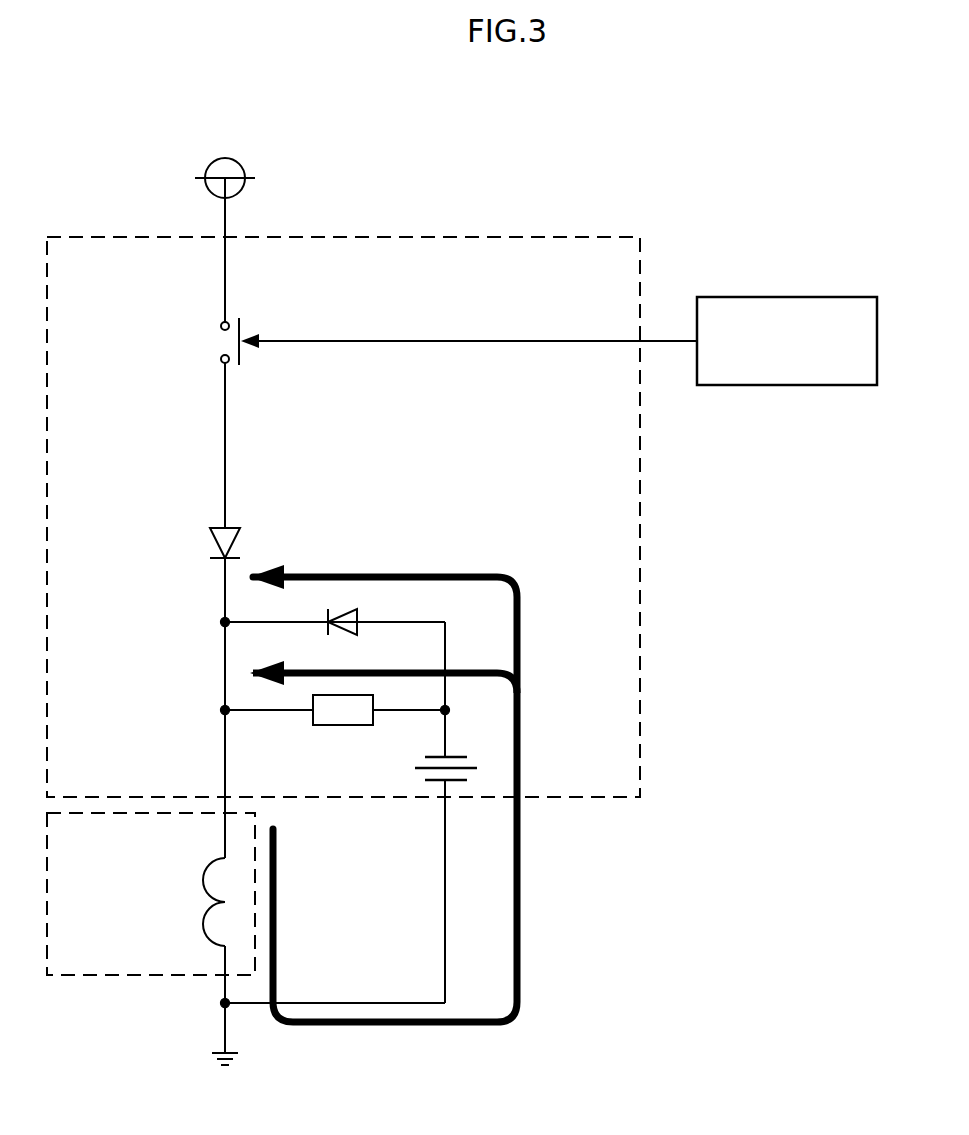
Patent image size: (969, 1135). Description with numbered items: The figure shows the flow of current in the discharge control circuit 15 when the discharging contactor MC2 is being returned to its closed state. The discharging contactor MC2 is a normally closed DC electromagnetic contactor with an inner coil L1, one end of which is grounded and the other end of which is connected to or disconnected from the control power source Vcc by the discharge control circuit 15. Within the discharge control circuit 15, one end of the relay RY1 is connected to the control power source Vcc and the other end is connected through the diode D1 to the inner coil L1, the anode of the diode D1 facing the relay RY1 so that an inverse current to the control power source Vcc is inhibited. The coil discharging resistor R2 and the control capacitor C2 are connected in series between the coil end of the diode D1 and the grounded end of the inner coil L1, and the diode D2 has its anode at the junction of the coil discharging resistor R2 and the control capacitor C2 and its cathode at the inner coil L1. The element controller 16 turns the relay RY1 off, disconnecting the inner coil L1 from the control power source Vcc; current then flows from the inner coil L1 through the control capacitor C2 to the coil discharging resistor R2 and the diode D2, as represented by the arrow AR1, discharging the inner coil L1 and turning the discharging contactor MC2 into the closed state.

The control power source Vcc is at (238, 162).
The discharge control circuit 15 is at (520, 237).
The relay RY1 is at (240, 320).
The element controller 16 is at (765, 296).
The diode D1 is at (234, 526).
The diode D2 is at (357, 628).
The coil discharging resistor R2 is at (330, 727).
The control capacitor C2 is at (455, 756).
The arrow AR1 is at (522, 912).
The inner coil L1 is at (205, 907).
The discharging contactor MC2 is at (152, 975).